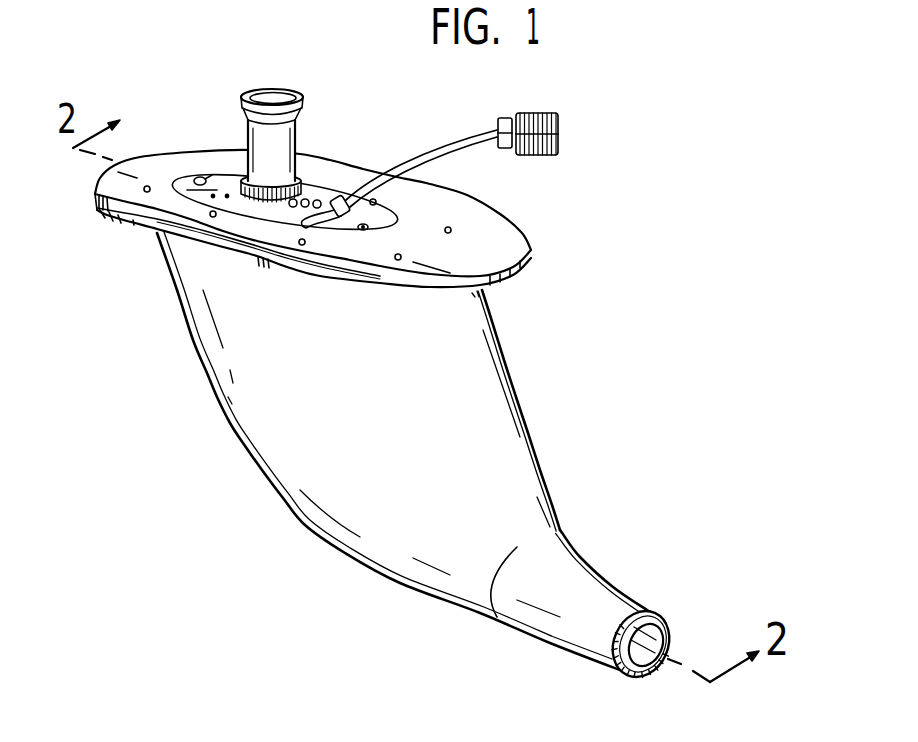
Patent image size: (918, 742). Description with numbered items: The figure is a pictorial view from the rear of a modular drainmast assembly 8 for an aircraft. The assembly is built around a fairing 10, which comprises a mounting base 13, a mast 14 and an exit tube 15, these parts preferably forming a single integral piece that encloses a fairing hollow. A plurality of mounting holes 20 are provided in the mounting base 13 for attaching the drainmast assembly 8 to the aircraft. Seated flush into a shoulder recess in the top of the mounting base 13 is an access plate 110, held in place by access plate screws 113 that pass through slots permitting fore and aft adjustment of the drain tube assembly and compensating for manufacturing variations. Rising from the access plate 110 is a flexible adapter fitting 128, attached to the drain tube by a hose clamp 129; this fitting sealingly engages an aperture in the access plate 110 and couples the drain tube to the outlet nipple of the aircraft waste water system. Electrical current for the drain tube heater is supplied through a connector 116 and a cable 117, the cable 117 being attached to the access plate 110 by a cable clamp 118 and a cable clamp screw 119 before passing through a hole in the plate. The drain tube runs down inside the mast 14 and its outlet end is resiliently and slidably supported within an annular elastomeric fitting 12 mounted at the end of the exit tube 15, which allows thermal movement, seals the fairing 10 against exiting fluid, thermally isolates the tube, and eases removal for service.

The drainmast assembly 8 is at (200, 487).
The fairing 10 is at (297, 523).
The elastomeric fitting 12 is at (660, 627).
The mounting base 13 is at (503, 247).
The mast 14 is at (391, 451).
The exit tube 15 is at (593, 580).
The mounting holes 20 is at (195, 163).
The access plate 110 is at (220, 170).
The access plate screws 113 is at (197, 181).
The connector 116 is at (537, 115).
The cable 117 is at (460, 133).
The cable clamp 118 is at (343, 197).
The cable clamp screw 119 is at (324, 202).
The flexible adapter fitting 128 is at (303, 196).
The hose clamp 129 is at (235, 187).